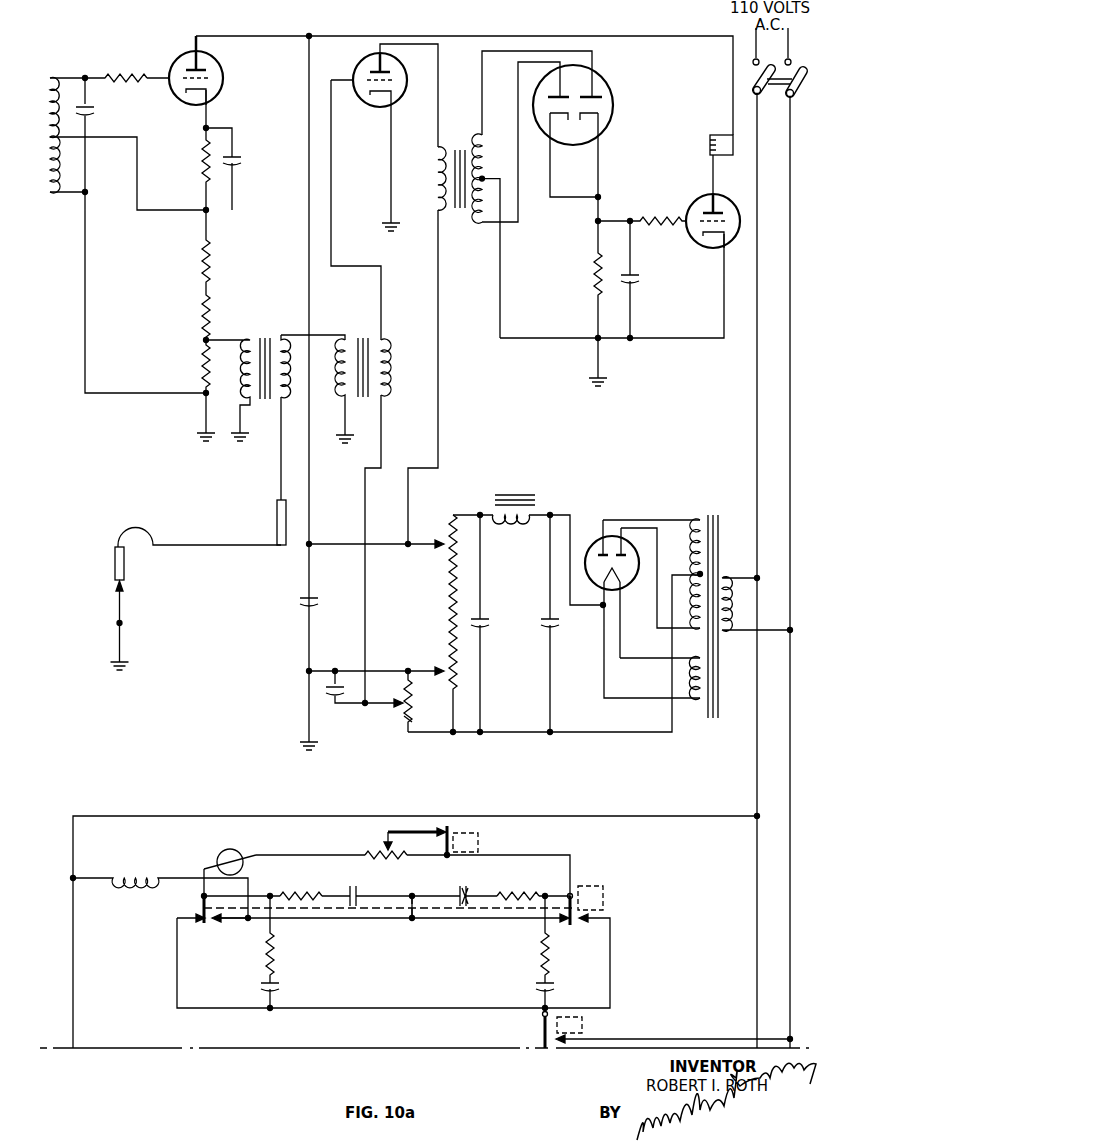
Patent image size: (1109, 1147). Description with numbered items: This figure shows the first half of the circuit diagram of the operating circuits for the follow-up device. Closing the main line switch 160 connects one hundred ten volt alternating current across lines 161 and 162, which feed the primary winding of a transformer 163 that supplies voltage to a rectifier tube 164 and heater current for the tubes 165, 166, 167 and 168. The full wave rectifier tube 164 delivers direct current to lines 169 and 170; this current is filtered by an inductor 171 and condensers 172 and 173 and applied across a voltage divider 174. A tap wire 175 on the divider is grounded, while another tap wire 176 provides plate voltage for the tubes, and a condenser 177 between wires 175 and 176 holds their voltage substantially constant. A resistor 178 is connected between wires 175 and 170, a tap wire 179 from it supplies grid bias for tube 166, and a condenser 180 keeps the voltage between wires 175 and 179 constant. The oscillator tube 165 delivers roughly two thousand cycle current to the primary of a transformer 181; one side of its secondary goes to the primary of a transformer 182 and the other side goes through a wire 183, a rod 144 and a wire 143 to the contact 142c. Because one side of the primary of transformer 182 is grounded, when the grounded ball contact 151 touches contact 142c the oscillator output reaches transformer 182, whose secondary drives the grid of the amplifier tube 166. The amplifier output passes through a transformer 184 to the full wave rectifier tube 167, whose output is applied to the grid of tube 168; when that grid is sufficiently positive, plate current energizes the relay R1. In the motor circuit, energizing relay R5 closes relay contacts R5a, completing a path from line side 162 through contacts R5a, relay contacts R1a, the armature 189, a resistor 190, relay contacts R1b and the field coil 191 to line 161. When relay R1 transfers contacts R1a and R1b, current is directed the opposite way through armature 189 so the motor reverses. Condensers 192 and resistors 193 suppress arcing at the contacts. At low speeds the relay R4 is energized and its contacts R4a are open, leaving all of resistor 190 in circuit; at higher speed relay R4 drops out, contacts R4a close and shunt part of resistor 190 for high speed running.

The contact 142c is at (115, 565).
The wire 143 is at (200, 545).
The rod 144 is at (277, 514).
The ball contact 151 is at (118, 592).
The main line switch 160 is at (766, 97).
The line 161 is at (755, 374).
The line 162 is at (788, 407).
The transformer 163 is at (716, 519).
The rectifier tube 164 is at (590, 548).
The oscillator tube 165 is at (222, 70).
The amplifier tube 166 is at (356, 66).
The rectifier tube 167 is at (608, 87).
The tube 168 is at (692, 204).
The line 169 is at (562, 515).
The line 170 is at (596, 731).
The inductor 171 is at (512, 493).
The condenser 172 is at (553, 625).
The condenser 173 is at (489, 620).
The voltage divider 174 is at (447, 576).
The tap wire 175 is at (422, 670).
The tap wire 176 is at (420, 543).
The condenser 177 is at (320, 598).
The resistor 178 is at (418, 712).
The tap wire 179 is at (396, 706).
The condenser 180 is at (326, 688).
The transformer 181 is at (271, 322).
The transformer 182 is at (358, 337).
The wire 183 is at (280, 466).
The transformer 184 is at (459, 146).
The armature 189 is at (244, 851).
The resistor 190 is at (402, 858).
The field coil 191 is at (151, 871).
The condensers 192 is at (362, 876).
The resistors 193 is at (300, 893).
The relay R1 is at (708, 145).
The relay contacts R1a is at (204, 923).
The relay contacts R1b is at (572, 924).
The relay R4 is at (480, 843).
The relay contacts R4a is at (445, 826).
The relay R5 is at (585, 1021).
The relay contacts R5a is at (540, 1033).